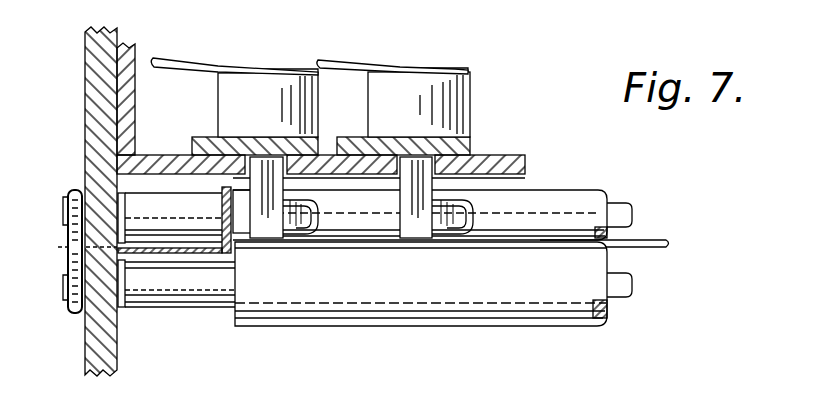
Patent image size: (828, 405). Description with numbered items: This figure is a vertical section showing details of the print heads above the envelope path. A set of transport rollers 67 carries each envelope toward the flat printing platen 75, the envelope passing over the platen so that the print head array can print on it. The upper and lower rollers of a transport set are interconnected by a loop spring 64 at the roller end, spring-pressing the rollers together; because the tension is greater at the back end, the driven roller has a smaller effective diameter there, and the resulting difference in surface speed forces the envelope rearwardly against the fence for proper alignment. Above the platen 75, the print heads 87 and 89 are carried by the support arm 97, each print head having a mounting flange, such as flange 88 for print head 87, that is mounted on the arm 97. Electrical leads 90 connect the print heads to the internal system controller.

The loop spring 64 is at (70, 248).
The transport rollers 67 is at (514, 331).
The printing platen 75 is at (664, 240).
The print head 87 is at (470, 98).
The mounting flange 88 is at (470, 147).
The print head 89 is at (215, 103).
The electrical leads 90 is at (398, 66).
The support arm 97 is at (527, 164).